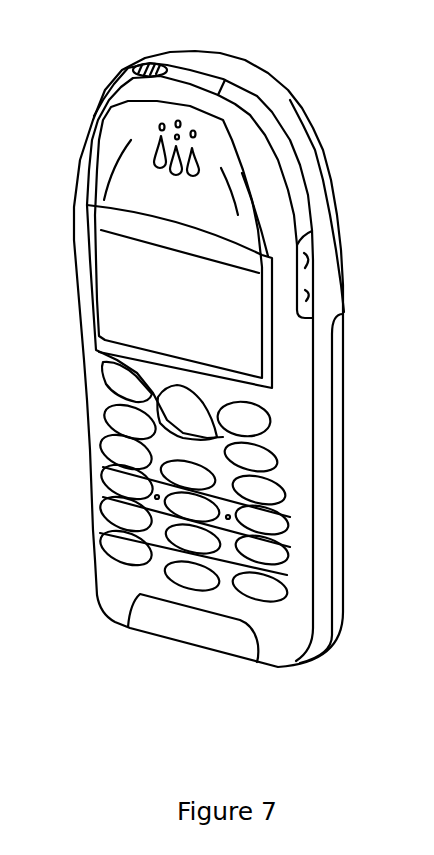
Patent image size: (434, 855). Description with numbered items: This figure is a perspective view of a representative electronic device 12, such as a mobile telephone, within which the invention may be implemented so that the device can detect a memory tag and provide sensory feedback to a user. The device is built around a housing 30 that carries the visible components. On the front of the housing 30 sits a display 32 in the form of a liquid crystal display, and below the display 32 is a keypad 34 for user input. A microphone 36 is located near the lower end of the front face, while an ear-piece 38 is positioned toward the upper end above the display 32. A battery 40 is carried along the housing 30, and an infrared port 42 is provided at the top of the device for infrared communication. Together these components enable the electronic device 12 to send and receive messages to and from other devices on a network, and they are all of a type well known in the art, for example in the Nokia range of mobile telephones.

The electronic device 12 is at (296, 57).
The housing 30 is at (315, 168).
The display 32 is at (242, 336).
The keypad 34 is at (260, 590).
The microphone 36 is at (148, 620).
The ear-piece 38 is at (160, 141).
The battery 40 is at (336, 577).
The infrared port 42 is at (194, 80).